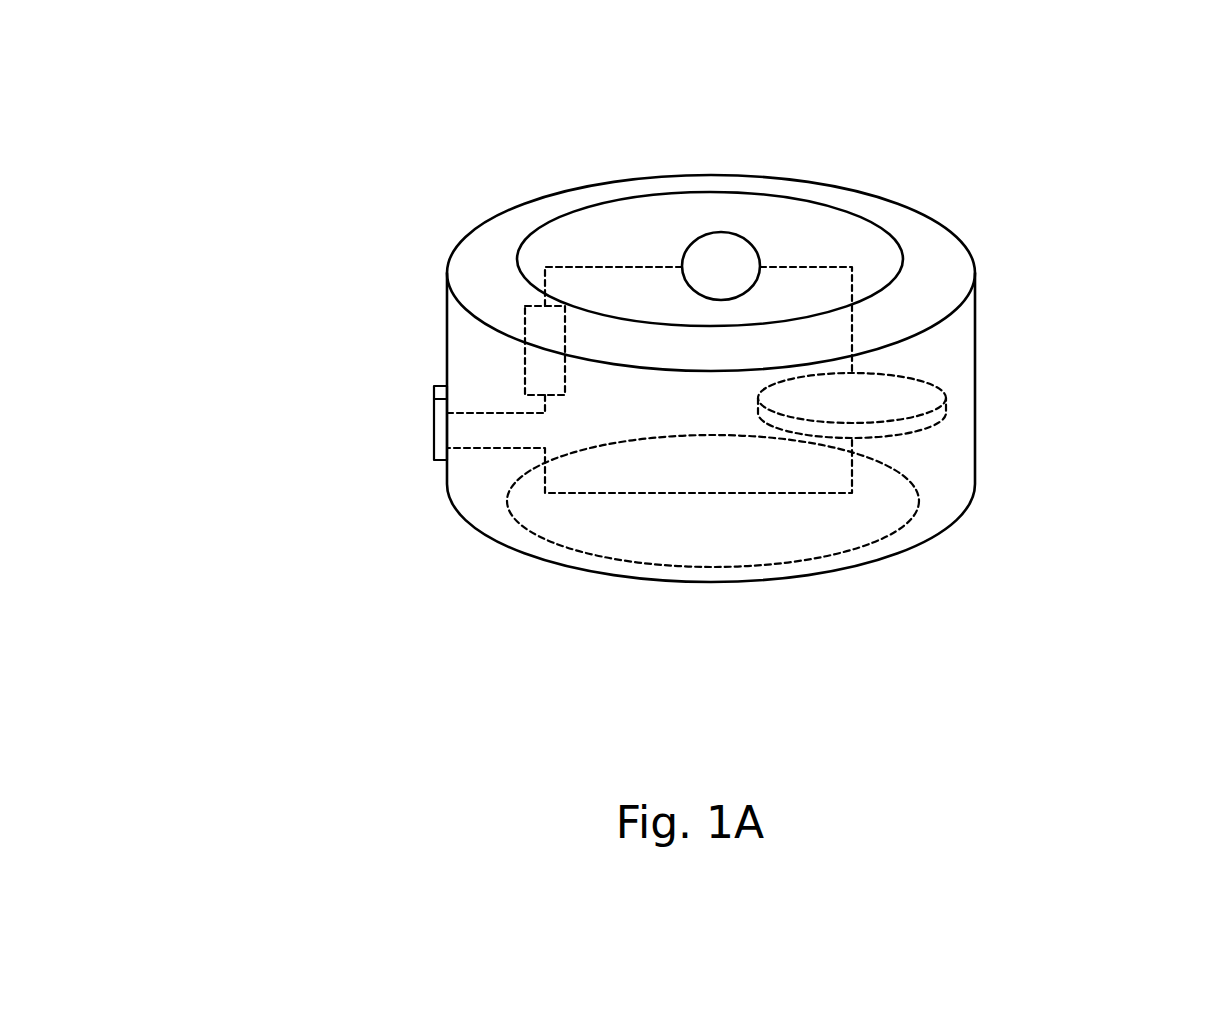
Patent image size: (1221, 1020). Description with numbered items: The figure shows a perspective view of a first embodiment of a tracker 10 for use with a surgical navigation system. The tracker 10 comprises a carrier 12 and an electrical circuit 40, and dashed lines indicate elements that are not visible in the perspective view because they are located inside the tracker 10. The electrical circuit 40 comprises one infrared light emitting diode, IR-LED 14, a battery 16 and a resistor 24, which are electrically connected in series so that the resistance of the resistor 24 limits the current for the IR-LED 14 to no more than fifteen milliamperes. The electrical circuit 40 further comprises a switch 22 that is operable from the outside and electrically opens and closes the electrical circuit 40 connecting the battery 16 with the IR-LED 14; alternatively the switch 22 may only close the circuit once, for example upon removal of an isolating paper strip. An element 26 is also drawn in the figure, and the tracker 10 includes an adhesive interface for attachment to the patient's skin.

The tracker 10 is at (283, 134).
The carrier 12 is at (910, 548).
The IR-LED 14 is at (733, 233).
The battery 16 is at (884, 402).
The switch 22 is at (435, 438).
The resistor 24 is at (545, 373).
The base element 26 is at (797, 538).
The electrical circuit 40 is at (653, 506).